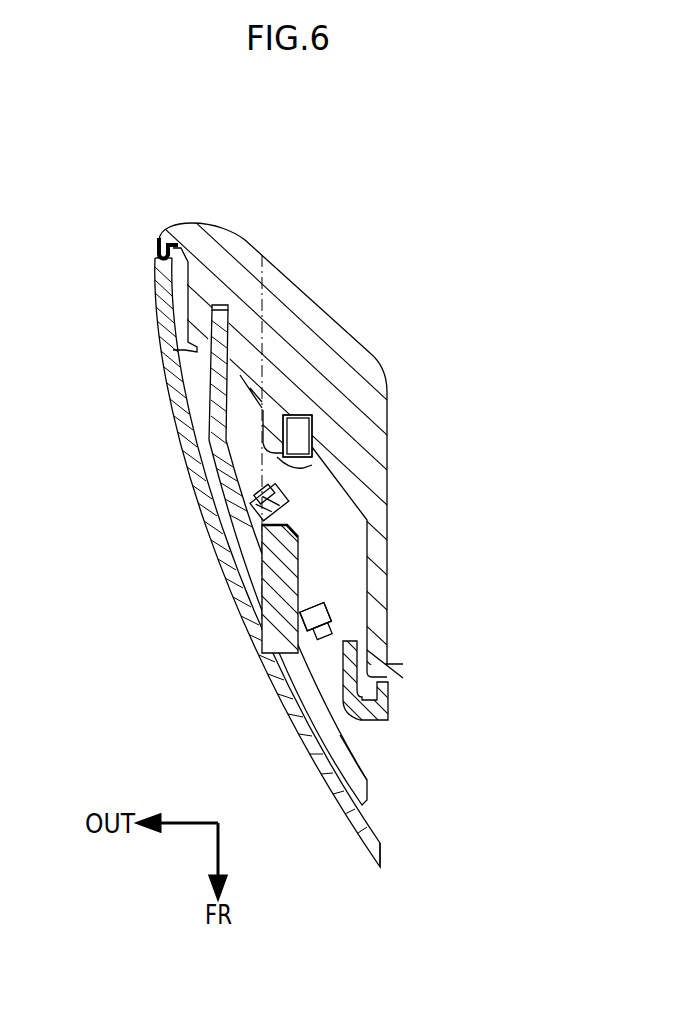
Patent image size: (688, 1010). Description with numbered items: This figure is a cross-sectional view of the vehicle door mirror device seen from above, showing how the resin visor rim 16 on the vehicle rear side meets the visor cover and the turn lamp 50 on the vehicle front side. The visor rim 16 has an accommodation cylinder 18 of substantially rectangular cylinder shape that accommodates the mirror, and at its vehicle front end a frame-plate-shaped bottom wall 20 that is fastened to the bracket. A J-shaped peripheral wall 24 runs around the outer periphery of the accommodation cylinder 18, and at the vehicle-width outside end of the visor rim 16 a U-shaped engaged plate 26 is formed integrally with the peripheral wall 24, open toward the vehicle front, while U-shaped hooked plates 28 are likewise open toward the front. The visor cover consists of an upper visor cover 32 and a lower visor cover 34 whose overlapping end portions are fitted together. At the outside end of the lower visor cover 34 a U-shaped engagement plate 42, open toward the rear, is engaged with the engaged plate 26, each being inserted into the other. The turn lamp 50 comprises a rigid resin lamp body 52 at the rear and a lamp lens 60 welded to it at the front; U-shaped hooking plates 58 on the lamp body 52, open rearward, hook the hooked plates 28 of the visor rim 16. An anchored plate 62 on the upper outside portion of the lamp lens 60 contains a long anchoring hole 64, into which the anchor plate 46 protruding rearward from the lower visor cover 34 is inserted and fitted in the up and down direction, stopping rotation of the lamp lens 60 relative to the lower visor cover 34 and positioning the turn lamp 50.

The visor rim 16 is at (361, 346).
The accommodation cylinder 18 is at (388, 548).
The bottom wall 20 is at (396, 690).
The peripheral wall 24 is at (163, 240).
The engaged plate 26 is at (195, 353).
The hooked plate 28 is at (318, 470).
The upper visor cover 32 is at (196, 513).
The lower visor cover 34 is at (324, 743).
The engagement plate 42 is at (185, 330).
The anchor plate 46 is at (300, 575).
The turn lamp 50 is at (376, 728).
The lamp body 52 is at (297, 436).
The hooking plate 58 is at (314, 428).
The lamp lens 60 is at (316, 617).
The anchored plate 62 is at (340, 618).
The anchoring hole 64 is at (270, 516).